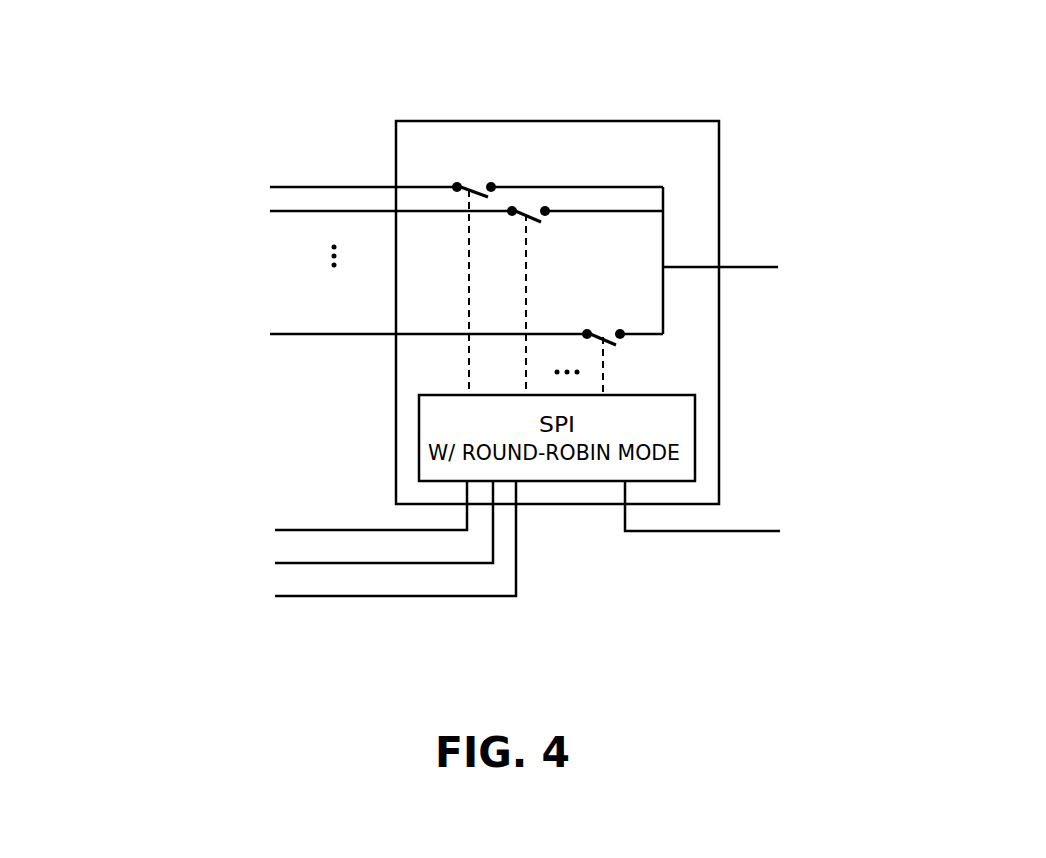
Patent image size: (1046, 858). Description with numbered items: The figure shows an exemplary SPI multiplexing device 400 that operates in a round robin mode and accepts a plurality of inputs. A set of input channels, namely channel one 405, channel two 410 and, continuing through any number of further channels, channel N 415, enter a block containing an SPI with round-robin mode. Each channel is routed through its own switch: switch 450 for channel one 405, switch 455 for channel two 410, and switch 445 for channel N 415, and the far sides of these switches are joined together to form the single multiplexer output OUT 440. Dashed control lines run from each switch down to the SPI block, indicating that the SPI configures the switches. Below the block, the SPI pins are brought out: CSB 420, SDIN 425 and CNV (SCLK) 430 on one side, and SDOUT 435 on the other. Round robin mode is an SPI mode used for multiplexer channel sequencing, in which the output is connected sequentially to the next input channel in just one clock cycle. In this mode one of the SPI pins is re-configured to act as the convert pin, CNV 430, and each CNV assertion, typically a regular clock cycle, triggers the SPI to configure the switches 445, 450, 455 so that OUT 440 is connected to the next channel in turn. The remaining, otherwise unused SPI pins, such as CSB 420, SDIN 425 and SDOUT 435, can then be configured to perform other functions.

The SPI multiplexing device 400 is at (168, 64).
The channel 1 input 405 is at (138, 183).
The channel 2 input 410 is at (138, 208).
The channel N input 415 is at (138, 334).
The CSB pin 420 is at (213, 525).
The SDI pin 425 is at (200, 555).
The CNV (SCLK) pin 430 is at (133, 591).
The SDO pin 435 is at (862, 536).
The OUT 440 is at (838, 270).
The switch 445 is at (648, 360).
The switch 450 is at (475, 165).
The switch 455 is at (528, 190).